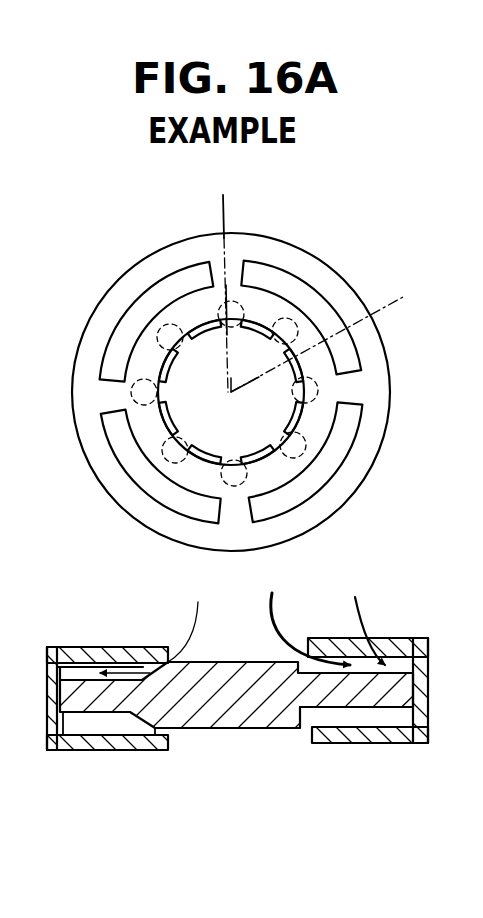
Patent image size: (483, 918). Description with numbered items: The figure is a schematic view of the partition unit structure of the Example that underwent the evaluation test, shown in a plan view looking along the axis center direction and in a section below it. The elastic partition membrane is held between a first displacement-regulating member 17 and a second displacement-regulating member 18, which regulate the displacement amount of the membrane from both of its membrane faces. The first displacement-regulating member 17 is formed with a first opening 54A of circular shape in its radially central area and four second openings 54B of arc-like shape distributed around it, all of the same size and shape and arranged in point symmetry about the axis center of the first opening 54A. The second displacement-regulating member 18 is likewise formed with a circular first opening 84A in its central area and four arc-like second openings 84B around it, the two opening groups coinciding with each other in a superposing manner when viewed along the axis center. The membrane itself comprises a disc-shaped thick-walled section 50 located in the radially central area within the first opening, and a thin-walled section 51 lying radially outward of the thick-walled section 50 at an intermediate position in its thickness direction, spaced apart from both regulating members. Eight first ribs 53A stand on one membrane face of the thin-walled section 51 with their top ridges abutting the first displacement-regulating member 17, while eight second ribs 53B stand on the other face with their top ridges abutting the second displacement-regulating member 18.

The first displacement-regulating member 17 is at (392, 379).
The second displacement-regulating member 18 is at (67, 751).
The thick-walled section 50 is at (175, 428).
The thin-walled section 51 is at (110, 713).
The first ribs 53A is at (150, 385).
The second ribs 53B is at (150, 729).
The first opening 54A is at (248, 322).
The second openings 54B is at (310, 297).
The first opening 84A is at (308, 744).
The second openings 84B is at (382, 744).